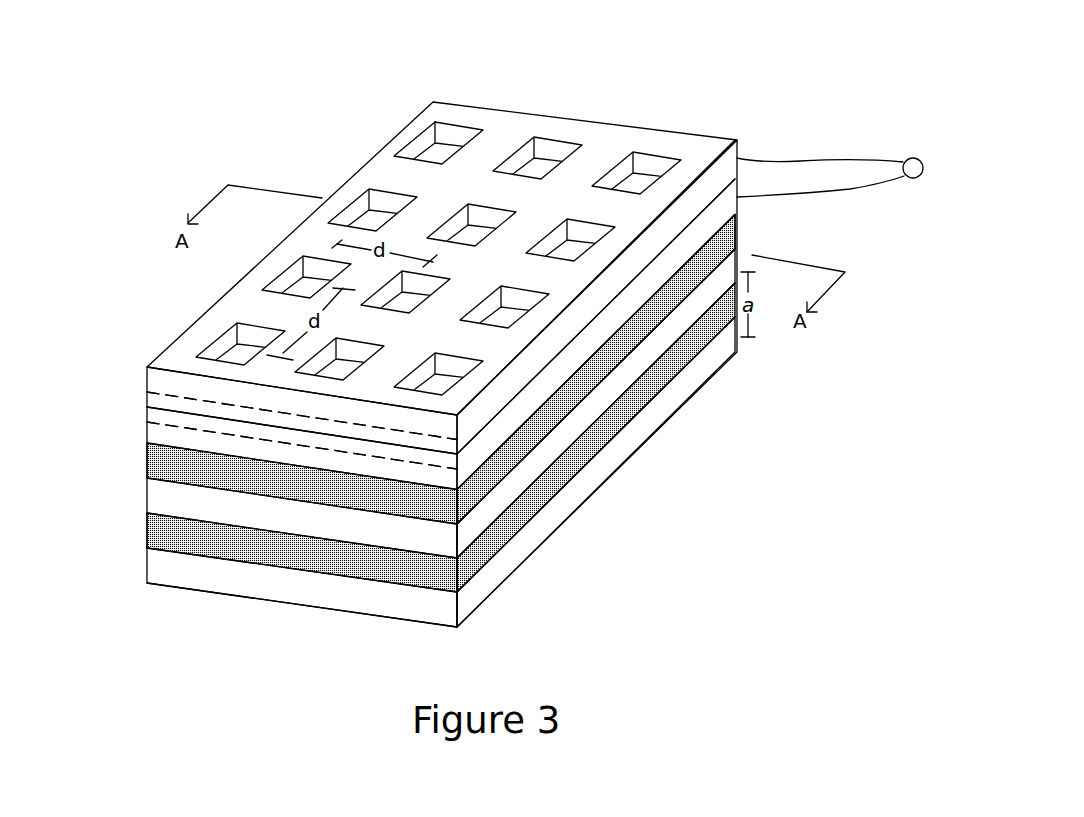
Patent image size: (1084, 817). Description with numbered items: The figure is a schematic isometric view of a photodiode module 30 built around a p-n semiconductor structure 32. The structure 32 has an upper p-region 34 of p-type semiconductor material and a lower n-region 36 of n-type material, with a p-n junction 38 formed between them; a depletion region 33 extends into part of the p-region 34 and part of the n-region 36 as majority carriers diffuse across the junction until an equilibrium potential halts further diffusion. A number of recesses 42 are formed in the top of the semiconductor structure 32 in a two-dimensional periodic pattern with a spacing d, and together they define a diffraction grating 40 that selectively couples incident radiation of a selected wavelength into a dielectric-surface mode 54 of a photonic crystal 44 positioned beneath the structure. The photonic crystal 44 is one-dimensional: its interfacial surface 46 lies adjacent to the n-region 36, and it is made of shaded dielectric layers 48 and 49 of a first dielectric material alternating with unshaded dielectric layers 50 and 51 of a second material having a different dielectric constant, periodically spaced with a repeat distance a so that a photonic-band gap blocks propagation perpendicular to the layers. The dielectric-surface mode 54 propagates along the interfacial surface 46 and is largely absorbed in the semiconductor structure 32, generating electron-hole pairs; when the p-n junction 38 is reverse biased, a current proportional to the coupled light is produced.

The photodiode module 30 is at (677, 87).
The p-n semiconductor structure 32 is at (128, 367).
The depletion region 33 is at (461, 436).
The p-region 34 is at (482, 412).
The n-region 36 is at (485, 438).
The p-n junction 38 is at (173, 410).
The diffraction grating 40 is at (473, 118).
The recesses 42 is at (437, 141).
The photonic crystal 44 is at (128, 445).
The interfacial surface 46 is at (188, 447).
The dielectric layer 48 is at (488, 477).
The dielectric layer 49 is at (472, 560).
The dielectric layer 50 is at (467, 522).
The dielectric layer 51 is at (472, 592).
The dielectric-surface mode 54 is at (917, 158).